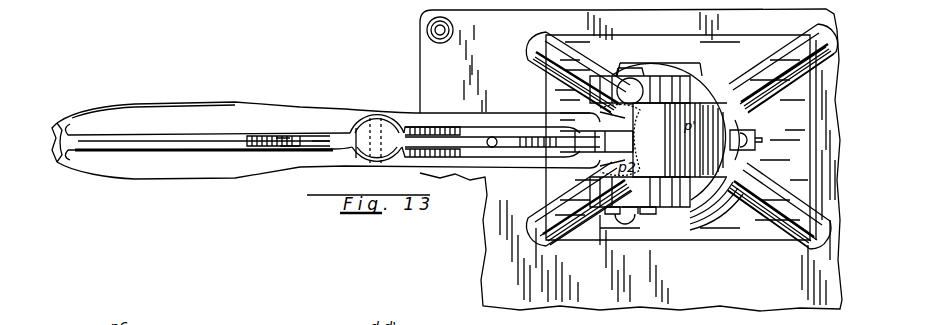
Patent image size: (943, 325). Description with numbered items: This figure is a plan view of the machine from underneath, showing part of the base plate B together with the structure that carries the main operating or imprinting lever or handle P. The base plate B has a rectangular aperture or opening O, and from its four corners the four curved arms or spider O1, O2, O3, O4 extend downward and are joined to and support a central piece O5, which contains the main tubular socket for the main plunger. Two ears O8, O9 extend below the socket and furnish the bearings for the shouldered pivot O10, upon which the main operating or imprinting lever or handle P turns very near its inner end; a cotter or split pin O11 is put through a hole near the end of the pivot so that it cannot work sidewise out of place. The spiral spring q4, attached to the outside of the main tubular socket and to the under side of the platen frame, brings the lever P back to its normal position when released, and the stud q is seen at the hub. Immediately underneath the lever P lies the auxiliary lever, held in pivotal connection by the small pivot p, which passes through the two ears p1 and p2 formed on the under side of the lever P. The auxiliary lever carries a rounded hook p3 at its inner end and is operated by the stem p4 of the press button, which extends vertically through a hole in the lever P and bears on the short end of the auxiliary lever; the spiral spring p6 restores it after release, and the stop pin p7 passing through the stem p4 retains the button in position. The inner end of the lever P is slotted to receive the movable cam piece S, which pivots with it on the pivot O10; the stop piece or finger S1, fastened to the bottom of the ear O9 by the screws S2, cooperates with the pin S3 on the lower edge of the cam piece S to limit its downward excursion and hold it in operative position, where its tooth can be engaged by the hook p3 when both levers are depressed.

The main operating or imprinting lever or handle P is at (326, 140).
The small pivot p is at (380, 126).
The ear p1 is at (320, 133).
The ear p2 is at (357, 127).
The rounded hook p3 is at (596, 149).
The stem of the press button p4 is at (293, 136).
The spiral spring p6 is at (493, 137).
The stop pin p7 is at (292, 147).
The base plate B is at (631, 160).
The movable cam piece S is at (612, 136).
The stop piece or finger S1 is at (585, 112).
The screws S2 is at (650, 52).
The pin S3 is at (650, 140).
The rectangular aperture or opening O is at (748, 140).
The curved arm O1 is at (579, 217).
The cotter or split pin O11 is at (647, 222).
The curved arm O2 is at (805, 248).
The curved arm O3 is at (783, 65).
The curved arm O4 is at (578, 65).
The central piece O5 is at (716, 204).
The ear O8 is at (690, 80).
The ear O9 is at (640, 192).
The pivot O10 is at (628, 76).
The stud q is at (746, 133).
The stud ring q4 is at (748, 160).